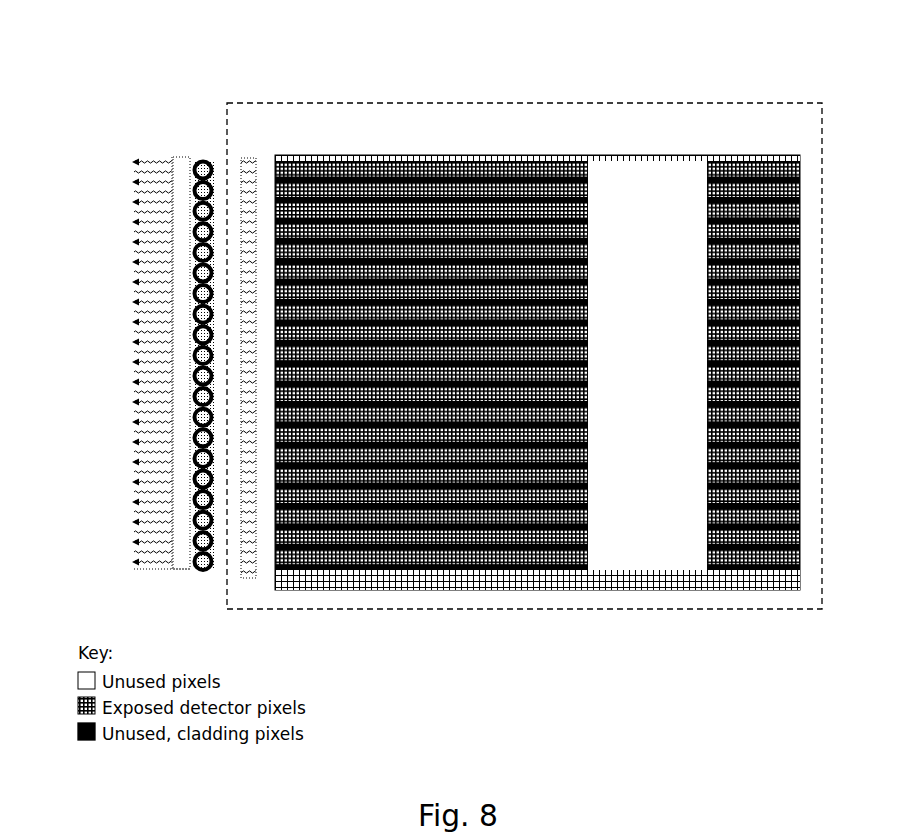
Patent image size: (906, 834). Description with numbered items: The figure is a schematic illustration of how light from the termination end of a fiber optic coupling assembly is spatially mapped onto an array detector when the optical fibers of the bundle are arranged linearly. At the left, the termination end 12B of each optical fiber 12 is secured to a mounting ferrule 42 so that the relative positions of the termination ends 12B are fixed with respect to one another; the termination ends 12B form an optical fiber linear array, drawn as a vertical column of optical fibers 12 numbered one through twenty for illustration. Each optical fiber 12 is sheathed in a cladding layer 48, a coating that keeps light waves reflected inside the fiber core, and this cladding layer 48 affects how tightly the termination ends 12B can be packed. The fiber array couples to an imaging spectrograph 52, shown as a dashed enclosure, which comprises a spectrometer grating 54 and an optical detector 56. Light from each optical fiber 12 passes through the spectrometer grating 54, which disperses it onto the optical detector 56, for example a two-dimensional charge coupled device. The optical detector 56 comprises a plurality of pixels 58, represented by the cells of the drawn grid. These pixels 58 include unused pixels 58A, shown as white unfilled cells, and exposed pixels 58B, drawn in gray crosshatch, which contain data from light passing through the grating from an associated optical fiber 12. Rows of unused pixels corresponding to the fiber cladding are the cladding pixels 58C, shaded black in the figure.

The optical fiber 12 is at (95, 128).
The termination end 12B is at (160, 158).
The mounting ferrule 42 is at (182, 157).
The cladding layer 48 is at (202, 160).
The imaging spectrograph 52 is at (344, 101).
The spectrometer grating 54 is at (253, 158).
The optical detector 56 is at (457, 151).
The pixels 58 is at (779, 153).
The unused pixels 58A is at (580, 157).
The exposed pixels 58B is at (589, 211).
The cladding pixels 58C is at (589, 262).